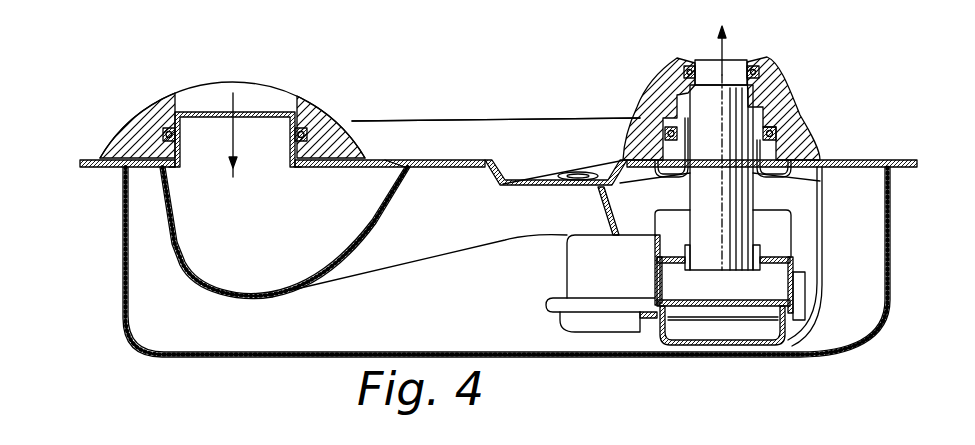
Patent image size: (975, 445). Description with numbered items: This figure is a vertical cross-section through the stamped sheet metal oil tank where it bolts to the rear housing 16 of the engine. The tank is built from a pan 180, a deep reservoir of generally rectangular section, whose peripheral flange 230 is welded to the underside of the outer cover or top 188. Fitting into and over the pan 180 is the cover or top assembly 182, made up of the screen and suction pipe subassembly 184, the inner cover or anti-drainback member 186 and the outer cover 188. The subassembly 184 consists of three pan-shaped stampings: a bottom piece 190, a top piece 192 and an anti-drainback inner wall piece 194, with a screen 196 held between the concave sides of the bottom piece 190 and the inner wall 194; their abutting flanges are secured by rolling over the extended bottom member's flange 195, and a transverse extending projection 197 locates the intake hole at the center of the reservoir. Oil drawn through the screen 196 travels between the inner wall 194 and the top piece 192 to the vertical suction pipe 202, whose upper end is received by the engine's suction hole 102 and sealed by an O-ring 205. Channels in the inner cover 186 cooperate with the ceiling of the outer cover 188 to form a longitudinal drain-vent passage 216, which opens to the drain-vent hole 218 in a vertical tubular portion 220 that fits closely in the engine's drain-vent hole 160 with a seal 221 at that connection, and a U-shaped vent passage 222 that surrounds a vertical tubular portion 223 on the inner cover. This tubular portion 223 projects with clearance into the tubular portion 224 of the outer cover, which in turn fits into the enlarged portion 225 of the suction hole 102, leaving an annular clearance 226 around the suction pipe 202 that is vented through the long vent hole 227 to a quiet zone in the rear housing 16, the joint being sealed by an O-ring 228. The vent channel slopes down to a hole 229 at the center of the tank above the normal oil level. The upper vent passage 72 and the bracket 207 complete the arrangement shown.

The rear housing 16 is at (326, 118).
The cover assembly 72 is at (460, 112).
The suction hole 102 is at (672, 68).
The drain-vent hole 160 is at (292, 97).
The pan 180 is at (505, 358).
The cover or top assembly 182 is at (503, 150).
The screen and suction pipe subassembly 184 is at (556, 282).
The inner cover or anti-drainback member 186 is at (442, 168).
The outer cover or top 188 is at (387, 157).
The bottom piece 190 is at (690, 343).
The top piece 192 is at (795, 292).
The anti-drainback inner wall piece 194 is at (657, 302).
The bottom member's flange 195 is at (804, 300).
The screen 196 is at (722, 321).
The transverse extending projection 197 is at (578, 251).
The suction pipe 202 is at (708, 248).
The O-ring 205 is at (757, 60).
The bracket 207 is at (762, 262).
The drain-vent passage 216 is at (225, 273).
The drain-vent hole 218 is at (265, 112).
The vertical tubular portion 220 is at (178, 114).
The seal ring 221 is at (163, 135).
The U-shaped vent passage 222 is at (615, 168).
The vertical tubular portion 223 is at (762, 172).
The tubular portion 224 is at (770, 135).
The enlarged portion 225 is at (648, 110).
The annular clearance 226 is at (762, 115).
The vent hole 227 is at (683, 66).
The O-ring 228 is at (665, 133).
The hole 229 is at (579, 180).
The peripheral flange 230 is at (98, 168).